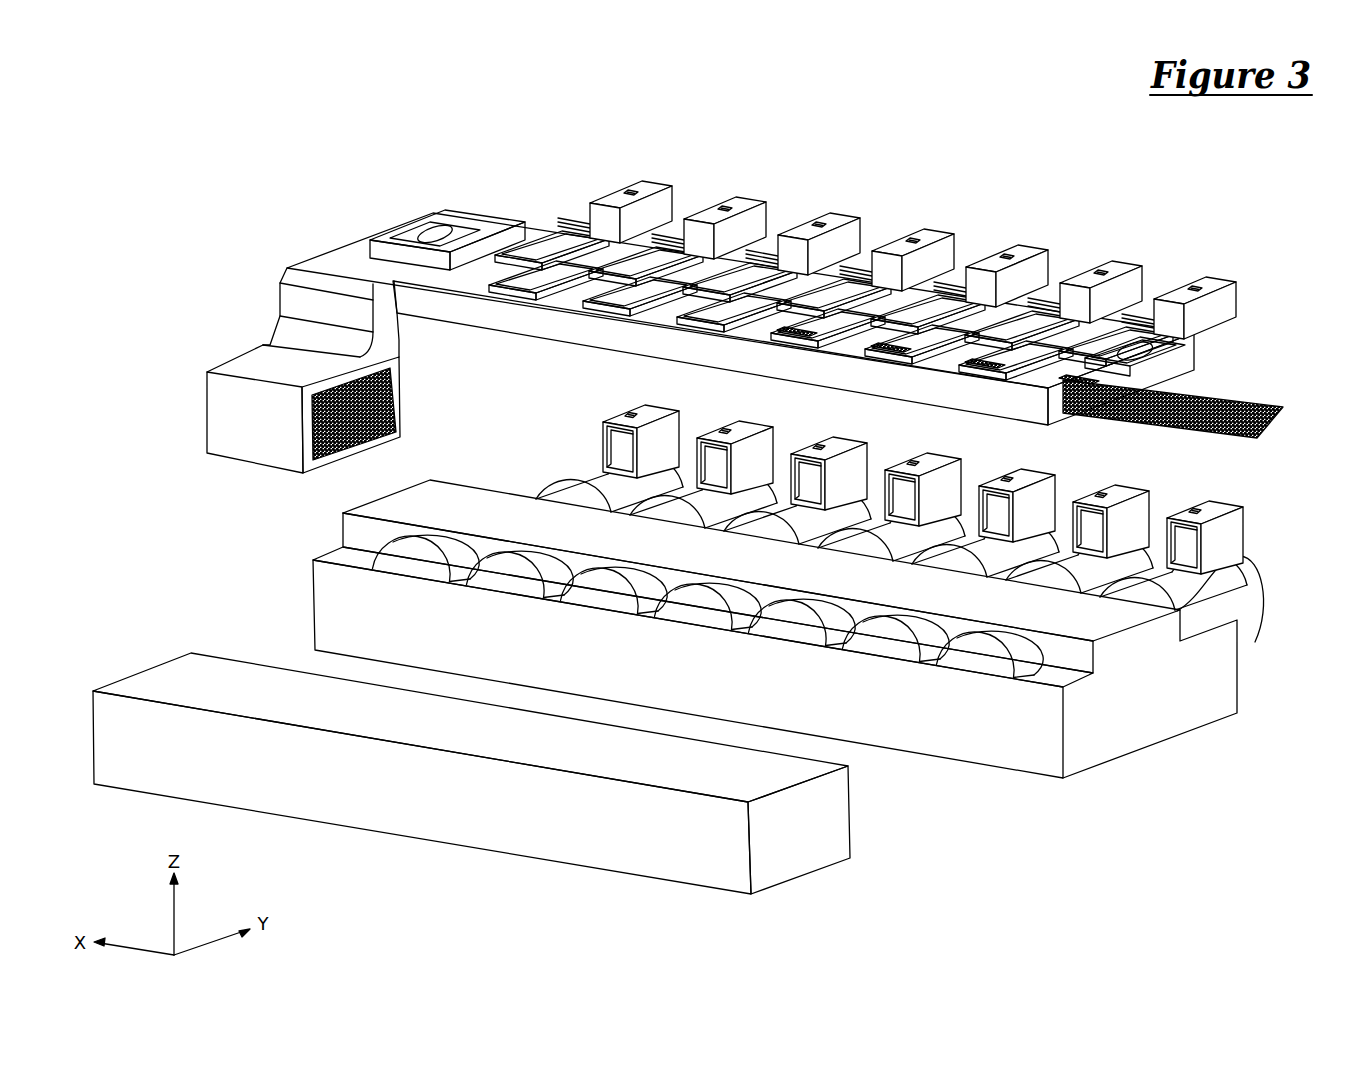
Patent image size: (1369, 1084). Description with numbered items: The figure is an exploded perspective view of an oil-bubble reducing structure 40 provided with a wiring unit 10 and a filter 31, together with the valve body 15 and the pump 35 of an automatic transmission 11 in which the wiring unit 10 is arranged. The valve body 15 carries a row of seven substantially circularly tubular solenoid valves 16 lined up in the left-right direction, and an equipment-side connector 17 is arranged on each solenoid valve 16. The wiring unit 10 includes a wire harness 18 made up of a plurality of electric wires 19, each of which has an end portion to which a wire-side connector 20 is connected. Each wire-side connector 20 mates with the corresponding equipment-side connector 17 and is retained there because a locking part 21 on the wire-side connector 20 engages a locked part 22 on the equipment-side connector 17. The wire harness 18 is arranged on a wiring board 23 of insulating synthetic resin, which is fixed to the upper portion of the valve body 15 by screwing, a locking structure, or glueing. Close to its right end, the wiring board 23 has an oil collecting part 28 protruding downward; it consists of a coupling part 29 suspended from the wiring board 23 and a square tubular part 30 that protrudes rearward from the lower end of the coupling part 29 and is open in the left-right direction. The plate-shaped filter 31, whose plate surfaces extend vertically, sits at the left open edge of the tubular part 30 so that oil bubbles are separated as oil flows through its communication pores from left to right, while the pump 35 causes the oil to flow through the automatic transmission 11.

The wiring unit 10 is at (1206, 324).
The automatic transmission 11 is at (818, 240).
The valve body 15 is at (1152, 707).
The solenoid valves 16 is at (1250, 602).
The equipment-side connectors 17 is at (1235, 508).
The wire harness 18 is at (1248, 400).
The electric wires 19 is at (1148, 313).
The wire-side connector 20 is at (1201, 262).
The locking part 21 is at (1190, 288).
The locked part 22 is at (1193, 512).
The wiring board 23 is at (1178, 365).
The oil collecting part 28 is at (248, 370).
The coupling part 29 is at (296, 297).
The tubular part 30 is at (272, 409).
The filter 31 is at (330, 452).
The pump 35 is at (810, 836).
The oil-bubble reducing structure 40 is at (224, 385).